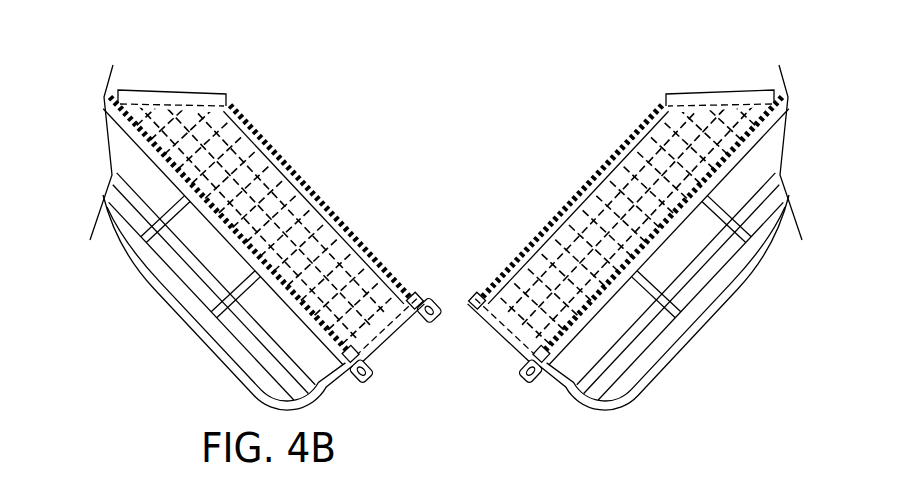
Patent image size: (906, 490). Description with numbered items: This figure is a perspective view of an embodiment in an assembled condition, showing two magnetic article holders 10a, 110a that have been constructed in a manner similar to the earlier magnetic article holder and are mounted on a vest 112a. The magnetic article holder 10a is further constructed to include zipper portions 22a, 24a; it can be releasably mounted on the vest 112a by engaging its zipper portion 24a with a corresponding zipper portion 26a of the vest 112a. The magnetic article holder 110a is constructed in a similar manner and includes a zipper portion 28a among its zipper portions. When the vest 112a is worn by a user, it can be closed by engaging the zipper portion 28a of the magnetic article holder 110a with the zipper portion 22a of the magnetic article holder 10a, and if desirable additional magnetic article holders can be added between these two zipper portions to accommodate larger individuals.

The magnetic article holder 10a is at (697, 88).
The magnetic article holder 110a is at (166, 85).
The zipper portion 22a is at (603, 170).
The zipper portion 28a is at (257, 130).
The vest 112a is at (158, 303).
The zipper portion 24a is at (511, 372).
The zipper portion 26a is at (540, 388).